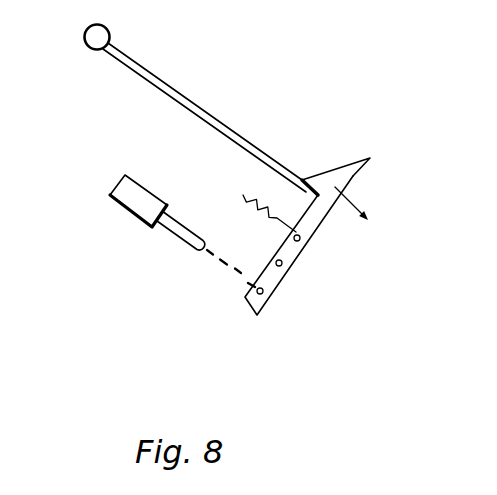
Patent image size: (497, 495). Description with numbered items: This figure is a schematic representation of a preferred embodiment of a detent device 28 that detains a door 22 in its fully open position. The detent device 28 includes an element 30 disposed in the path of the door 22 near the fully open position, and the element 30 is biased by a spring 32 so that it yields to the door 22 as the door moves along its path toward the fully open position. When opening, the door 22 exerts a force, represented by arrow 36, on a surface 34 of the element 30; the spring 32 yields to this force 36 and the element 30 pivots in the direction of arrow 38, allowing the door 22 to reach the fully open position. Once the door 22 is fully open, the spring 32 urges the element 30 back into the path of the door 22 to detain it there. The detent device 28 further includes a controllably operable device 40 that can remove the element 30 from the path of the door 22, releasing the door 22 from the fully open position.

The door 22 is at (208, 110).
The detent device 28 is at (155, 257).
The element 30 is at (353, 174).
The spring 32 is at (238, 197).
The surface 34 is at (341, 162).
The arrow representing force 36 is at (312, 168).
The arrow indicating pivot direction 38 is at (357, 192).
The controllably operable device 40 is at (121, 216).